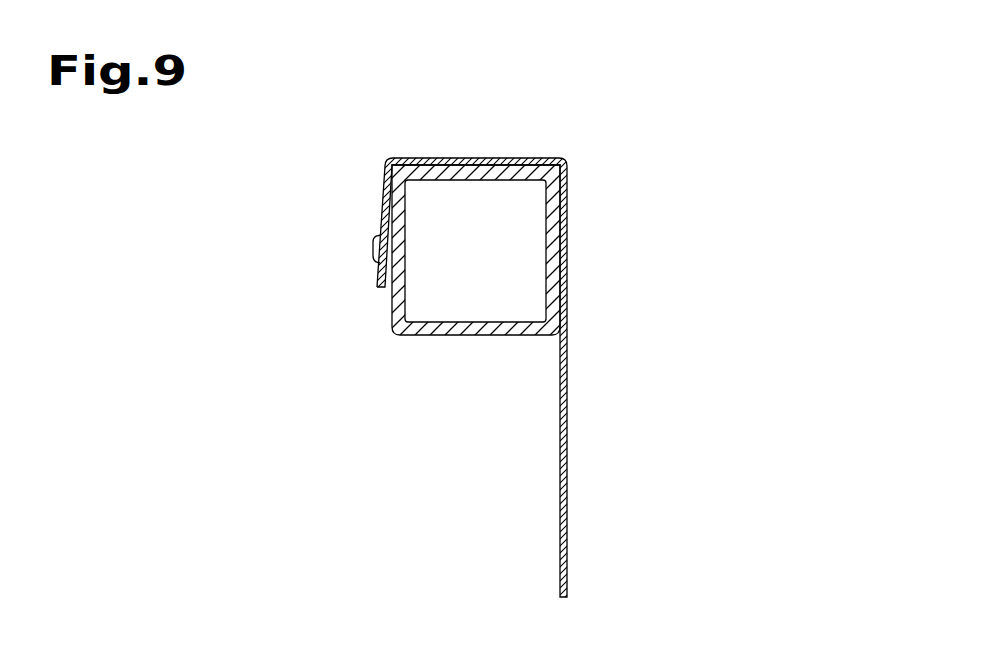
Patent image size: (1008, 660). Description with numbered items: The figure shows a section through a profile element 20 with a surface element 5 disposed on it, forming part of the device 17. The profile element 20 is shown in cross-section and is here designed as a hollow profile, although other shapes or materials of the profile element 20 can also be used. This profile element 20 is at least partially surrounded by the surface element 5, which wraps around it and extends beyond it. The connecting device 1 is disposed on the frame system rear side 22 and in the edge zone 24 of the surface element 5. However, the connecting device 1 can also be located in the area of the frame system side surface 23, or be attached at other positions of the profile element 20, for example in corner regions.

The device 17 is at (699, 129).
The edge zone 24 is at (415, 148).
The frame system rear side 22 is at (382, 185).
The profile element 20 is at (405, 335).
The frame system side surface 23 is at (475, 151).
The surface element 5 is at (567, 418).
The connecting device 1 is at (373, 248).